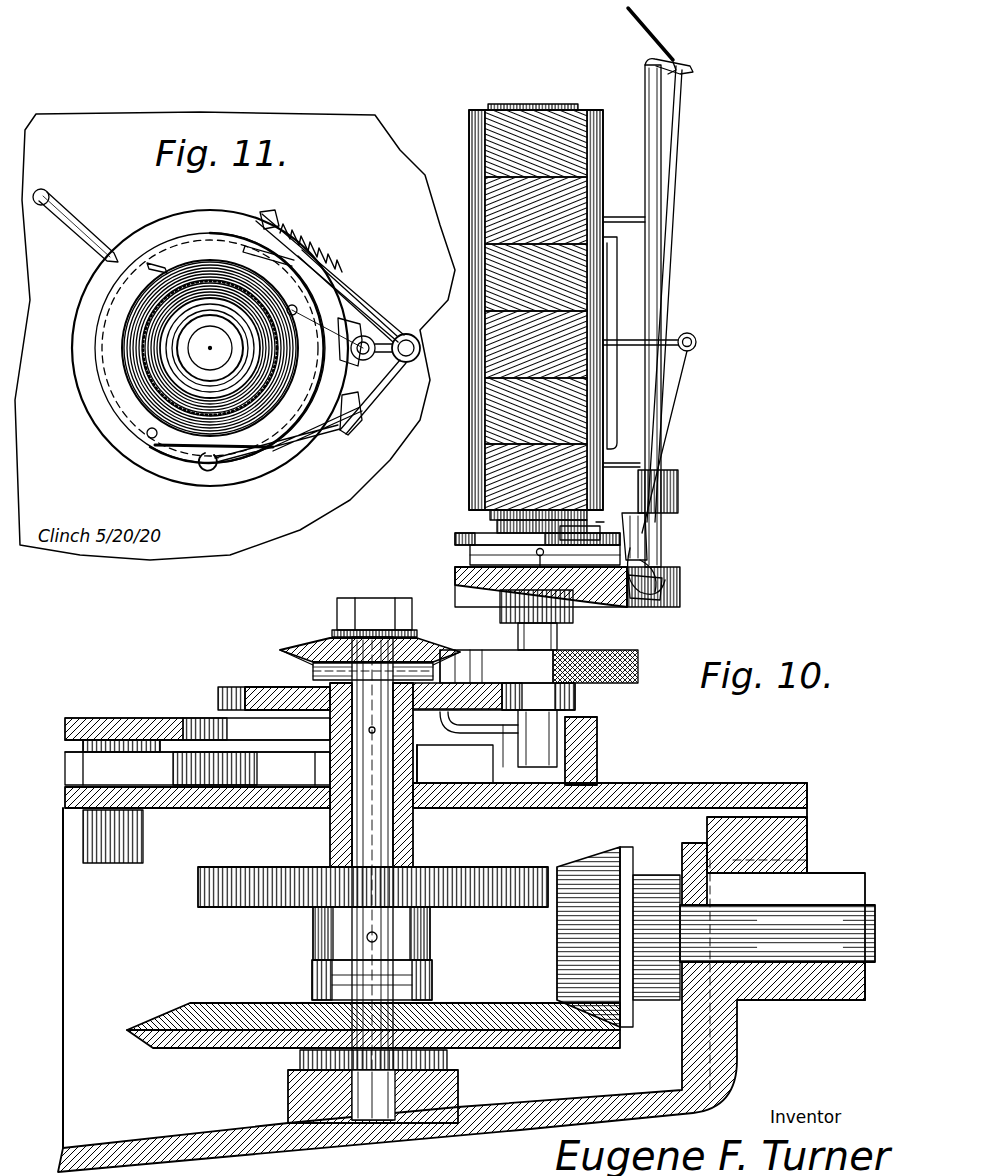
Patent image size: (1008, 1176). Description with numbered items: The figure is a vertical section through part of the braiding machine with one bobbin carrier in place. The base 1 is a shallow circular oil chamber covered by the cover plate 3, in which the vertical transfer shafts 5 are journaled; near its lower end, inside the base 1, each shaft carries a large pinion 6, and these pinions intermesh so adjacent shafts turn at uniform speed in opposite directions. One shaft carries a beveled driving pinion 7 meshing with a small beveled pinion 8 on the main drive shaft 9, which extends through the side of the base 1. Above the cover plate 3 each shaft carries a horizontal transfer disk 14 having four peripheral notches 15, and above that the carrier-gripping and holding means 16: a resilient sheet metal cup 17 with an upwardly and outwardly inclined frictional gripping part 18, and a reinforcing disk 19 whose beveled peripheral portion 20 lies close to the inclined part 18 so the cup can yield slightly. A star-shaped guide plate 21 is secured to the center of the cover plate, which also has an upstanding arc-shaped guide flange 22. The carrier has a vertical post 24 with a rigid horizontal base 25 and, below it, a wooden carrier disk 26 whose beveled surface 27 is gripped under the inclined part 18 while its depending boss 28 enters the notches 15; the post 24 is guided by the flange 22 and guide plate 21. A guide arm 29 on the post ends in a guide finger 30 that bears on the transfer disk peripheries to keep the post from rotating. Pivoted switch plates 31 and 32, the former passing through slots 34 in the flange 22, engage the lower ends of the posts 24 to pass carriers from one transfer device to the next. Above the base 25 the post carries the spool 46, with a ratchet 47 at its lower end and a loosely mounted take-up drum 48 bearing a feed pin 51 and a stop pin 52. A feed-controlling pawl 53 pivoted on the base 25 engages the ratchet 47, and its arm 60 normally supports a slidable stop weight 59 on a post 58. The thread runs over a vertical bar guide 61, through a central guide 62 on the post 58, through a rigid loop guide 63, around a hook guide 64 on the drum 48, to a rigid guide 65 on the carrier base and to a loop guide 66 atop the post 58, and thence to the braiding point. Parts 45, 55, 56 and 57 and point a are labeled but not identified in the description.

In FIG. 10, the base 1 is at (500, 1127).
In FIG. 10, the cover plate 3 is at (670, 760).
In FIG. 10, the transfer shaft 5 is at (370, 830).
In FIG. 10, the large pinion 6 is at (257, 843).
In FIG. 10, the beveled driving pinion 7 is at (163, 1020).
In FIG. 10, the small beveled pinion 8 is at (592, 873).
In FIG. 10, the main drive shaft 9 is at (815, 925).
In FIG. 10, the transfer disk 14 is at (250, 690).
In FIG. 10, the notch 15 is at (218, 698).
In FIG. 10, the carrier-gripping and holding means 16 is at (313, 642).
In FIG. 10, the sheet metal cup 17 is at (283, 648).
In FIG. 10, the inclined frictional gripping part 18 is at (295, 657).
In FIG. 10, the reinforcing disk 19 is at (425, 629).
In FIG. 10, the beveled peripheral portion 20 is at (440, 650).
In FIG. 10, the guide plate 21 is at (77, 718).
In FIG. 10, the guide flange 22 is at (597, 731).
In FIG. 10, the post 24 is at (557, 634).
In FIG. 11, the base 25 is at (327, 392).
In FIG. 10, the base 25 is at (485, 572).
In FIG. 11, the carrier disk 26 is at (92, 299).
In FIG. 10, the carrier disk 26 is at (638, 658).
In FIG. 10, the beveled surface 27 is at (638, 648).
In FIG. 10, the hub or boss 28 is at (576, 696).
In FIG. 11, the guide arm 29 is at (84, 226).
In FIG. 10, the guide arm 29 is at (505, 727).
In FIG. 11, the guide finger 30 is at (46, 186).
In FIG. 10, the guide finger 30 is at (438, 714).
In FIG. 10, the switch plate 31 is at (441, 766).
In FIG. 10, the switch plate 32 is at (150, 763).
In FIG. 10, the slot 34 is at (477, 754).
In FIG. 11, the coil core 45 is at (201, 366).
In FIG. 11, the spool 46 is at (205, 348).
In FIG. 10, the spool 46 is at (470, 133).
In FIG. 10, the ratchet 47 is at (492, 524).
In FIG. 10, the take-up drum 48 is at (470, 552).
In FIG. 11, the feed pin 51 is at (325, 260).
In FIG. 10, the feed pin 51 is at (592, 530).
In FIG. 11, the stop pin 52 is at (149, 437).
In FIG. 10, the stop pin 52 is at (455, 537).
In FIG. 11, the feed-controlling pawl 53 is at (297, 236).
In FIG. 10, the feed-controlling pawl 53 is at (650, 472).
In FIG. 11, the spring 55 is at (333, 263).
In FIG. 11, the lever 56 is at (243, 253).
In FIG. 11, the stop lug 57 is at (160, 262).
In FIG. 11, the post 58 is at (410, 336).
In FIG. 10, the post 58 is at (655, 210).
In FIG. 11, the stop weight 59 is at (376, 331).
In FIG. 10, the stop weight 59 is at (678, 474).
In FIG. 11, the arm 60 is at (306, 356).
In FIG. 10, the arm 60 is at (657, 520).
In FIG. 11, the vertical bar guide 61 is at (296, 307).
In FIG. 10, the vertical bar guide 61 is at (617, 270).
In FIG. 10, the central guide 62 is at (697, 342).
In FIG. 11, the rigid loop guide 63 is at (362, 398).
In FIG. 10, the rigid loop guide 63 is at (660, 564).
In FIG. 11, the hook guide 64 is at (205, 472).
In FIG. 10, the hook guide 64 is at (540, 556).
In FIG. 11, the rigid guide 65 is at (340, 431).
In FIG. 10, the rigid guide 65 is at (627, 580).
In FIG. 11, the loop guide 66 is at (402, 364).
In FIG. 10, the loop guide 66 is at (693, 68).
In FIG. 11, the point a is at (63, 319).